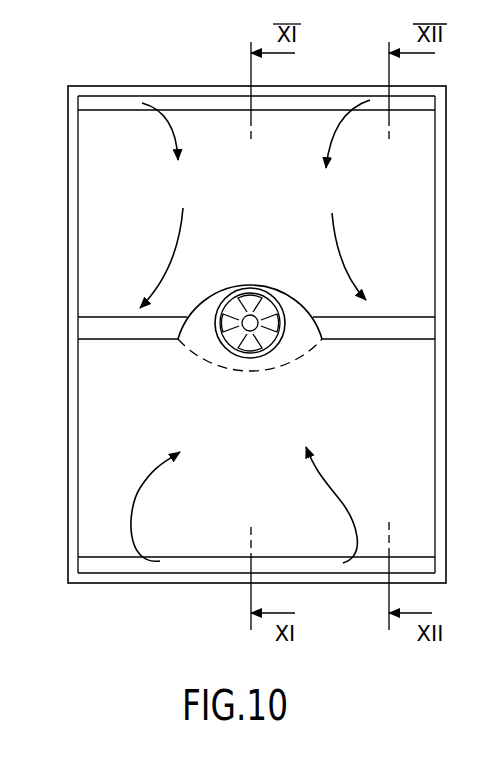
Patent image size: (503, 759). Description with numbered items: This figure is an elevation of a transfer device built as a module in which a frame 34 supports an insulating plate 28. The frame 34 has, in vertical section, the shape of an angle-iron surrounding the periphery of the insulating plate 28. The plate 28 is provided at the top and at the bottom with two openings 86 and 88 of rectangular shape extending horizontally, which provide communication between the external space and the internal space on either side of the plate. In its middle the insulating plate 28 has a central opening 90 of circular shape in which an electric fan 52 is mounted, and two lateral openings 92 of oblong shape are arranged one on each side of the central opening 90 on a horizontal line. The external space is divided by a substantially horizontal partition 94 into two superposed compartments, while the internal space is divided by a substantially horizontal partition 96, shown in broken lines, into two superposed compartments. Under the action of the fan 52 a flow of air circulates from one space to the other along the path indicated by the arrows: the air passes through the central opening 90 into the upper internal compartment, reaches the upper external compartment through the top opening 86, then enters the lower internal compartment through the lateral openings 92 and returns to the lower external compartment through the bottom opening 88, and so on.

The insulating plate 28 is at (405, 214).
The frame 34 is at (138, 588).
The electric fan 52 is at (251, 305).
The opening 86 is at (210, 101).
The opening 88 is at (217, 565).
The central opening 90 is at (250, 355).
The lateral openings 92 is at (150, 341).
The partition 94 is at (203, 293).
The partition 96 is at (265, 372).